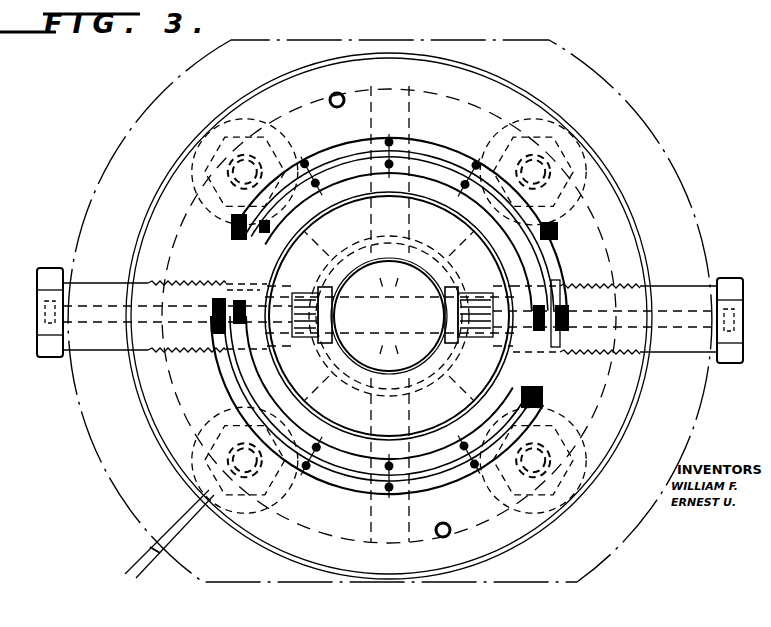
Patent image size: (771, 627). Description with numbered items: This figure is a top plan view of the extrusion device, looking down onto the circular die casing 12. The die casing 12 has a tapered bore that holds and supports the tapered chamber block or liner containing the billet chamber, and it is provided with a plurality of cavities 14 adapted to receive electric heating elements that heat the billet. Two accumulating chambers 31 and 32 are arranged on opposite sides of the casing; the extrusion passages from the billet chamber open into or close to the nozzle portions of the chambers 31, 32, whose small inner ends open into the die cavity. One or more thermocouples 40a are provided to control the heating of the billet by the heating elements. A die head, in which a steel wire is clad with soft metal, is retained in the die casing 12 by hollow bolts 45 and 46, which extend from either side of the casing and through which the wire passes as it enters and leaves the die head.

The die casing 12 is at (598, 258).
The cavities 14 is at (552, 232).
The accumulating chamber 31 is at (415, 106).
The accumulating chamber 32 is at (369, 506).
The thermocouple 40a is at (200, 499).
The hollow bolt 45 is at (700, 276).
The hollow bolt 46 is at (97, 290).